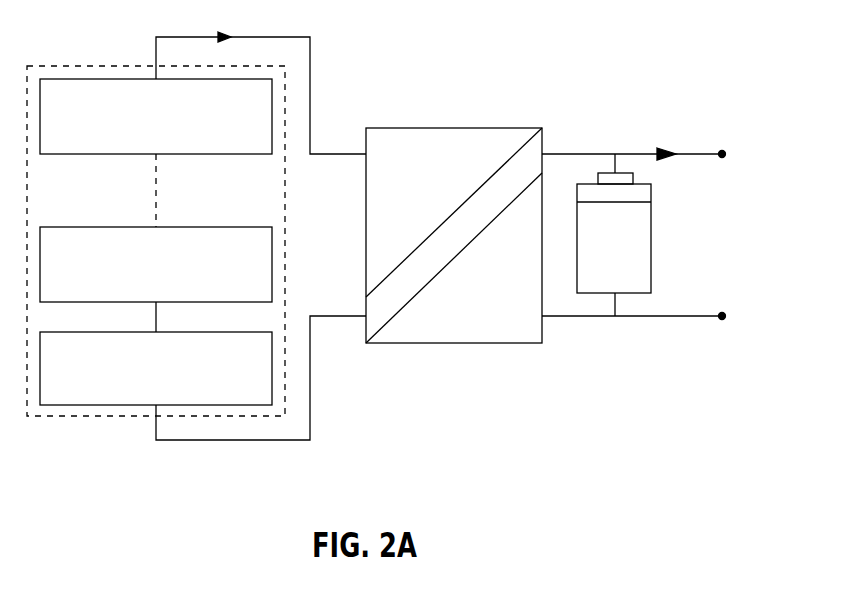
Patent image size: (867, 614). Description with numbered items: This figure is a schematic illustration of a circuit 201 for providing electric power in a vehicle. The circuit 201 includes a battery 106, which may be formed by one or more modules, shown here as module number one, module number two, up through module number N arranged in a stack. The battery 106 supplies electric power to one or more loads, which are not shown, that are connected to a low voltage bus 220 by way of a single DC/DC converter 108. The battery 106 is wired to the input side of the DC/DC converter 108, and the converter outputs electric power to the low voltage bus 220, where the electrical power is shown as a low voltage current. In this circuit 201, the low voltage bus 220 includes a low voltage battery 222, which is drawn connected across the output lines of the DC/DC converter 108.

The circuit 201 is at (668, 38).
The battery 106 is at (98, 65).
The DC/DC converter 108 is at (432, 128).
The low voltage (LV) bus 220 is at (728, 232).
The low voltage battery 222 is at (641, 295).